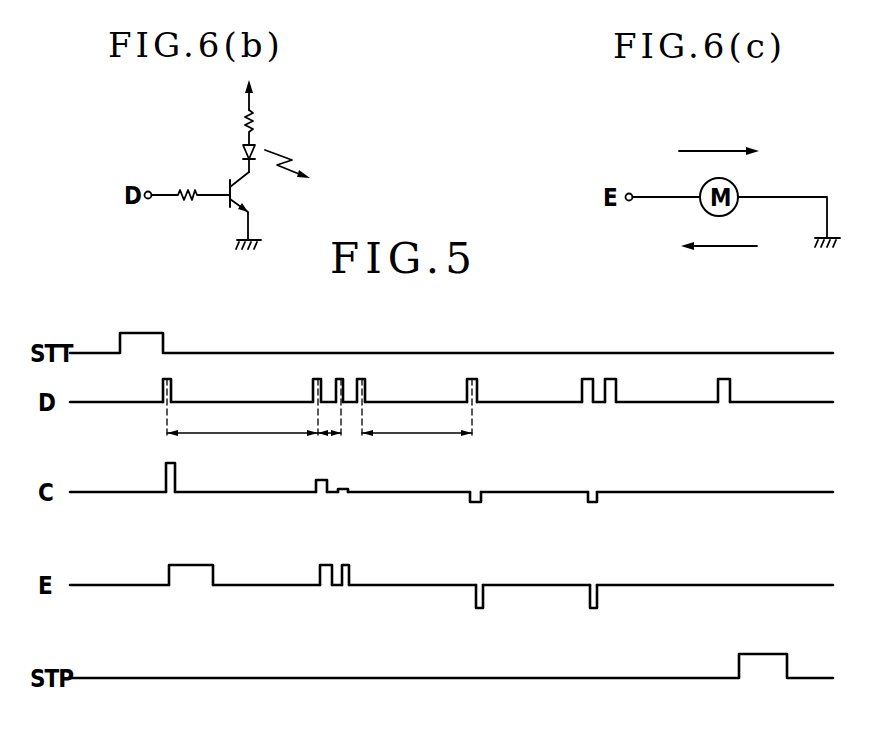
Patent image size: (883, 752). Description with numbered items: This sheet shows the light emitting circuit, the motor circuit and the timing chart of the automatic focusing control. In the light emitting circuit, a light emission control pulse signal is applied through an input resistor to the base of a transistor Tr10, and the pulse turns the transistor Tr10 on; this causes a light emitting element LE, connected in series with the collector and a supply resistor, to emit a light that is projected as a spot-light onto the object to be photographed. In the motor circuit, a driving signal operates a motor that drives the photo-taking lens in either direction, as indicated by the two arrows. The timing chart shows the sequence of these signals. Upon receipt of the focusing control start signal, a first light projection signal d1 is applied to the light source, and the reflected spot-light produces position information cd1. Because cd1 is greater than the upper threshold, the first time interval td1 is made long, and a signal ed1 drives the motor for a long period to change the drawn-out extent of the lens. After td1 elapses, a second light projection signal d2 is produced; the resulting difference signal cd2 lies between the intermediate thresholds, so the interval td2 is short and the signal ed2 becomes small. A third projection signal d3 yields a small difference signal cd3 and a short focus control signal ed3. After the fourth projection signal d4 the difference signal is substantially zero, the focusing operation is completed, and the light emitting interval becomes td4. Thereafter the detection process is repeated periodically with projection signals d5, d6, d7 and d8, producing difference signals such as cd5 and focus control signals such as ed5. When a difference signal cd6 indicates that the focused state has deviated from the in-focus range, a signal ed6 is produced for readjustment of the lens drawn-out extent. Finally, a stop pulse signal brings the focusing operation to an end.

In FIG. 6B, the light emitting element LE is at (243, 150).
In FIG. 6B, the transistor Tr10 is at (245, 193).
In FIG. 5, the light projection signal d1 is at (172, 378).
In FIG. 5, the second light projection signal d2 is at (320, 378).
In FIG. 5, the light projection signal d3 is at (342, 378).
In FIG. 5, the light projection signal d4 is at (365, 378).
In FIG. 5, the light projection signal d5 is at (478, 378).
In FIG. 5, the light projection signal d6 is at (590, 378).
In FIG. 5, the light projection signal d7 is at (613, 378).
In FIG. 5, the light projection signal d8 is at (723, 378).
In FIG. 5, the position information signal cd1 is at (168, 461).
In FIG. 5, the difference signal cd2 is at (322, 478).
In FIG. 5, the difference signal cd3 is at (347, 488).
In FIG. 5, the difference signal cd5 is at (472, 504).
In FIG. 5, the difference signal cd6 is at (588, 504).
In FIG. 5, the focus control signal ed1 is at (207, 563).
In FIG. 5, the focus control signal ed2 is at (327, 563).
In FIG. 5, the focus control signal ed3 is at (347, 563).
In FIG. 5, the focus control signal ed5 is at (476, 610).
In FIG. 5, the focus control signal ed6 is at (590, 610).
In FIG. 5, the first time interval td1 is at (242, 445).
In FIG. 5, the time interval td2 is at (332, 445).
In FIG. 5, the time interval td4 is at (417, 445).